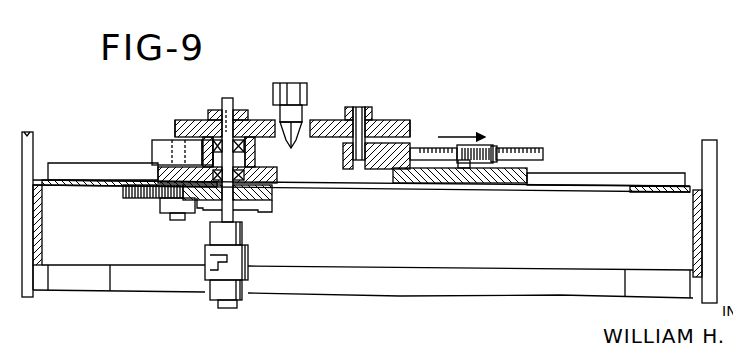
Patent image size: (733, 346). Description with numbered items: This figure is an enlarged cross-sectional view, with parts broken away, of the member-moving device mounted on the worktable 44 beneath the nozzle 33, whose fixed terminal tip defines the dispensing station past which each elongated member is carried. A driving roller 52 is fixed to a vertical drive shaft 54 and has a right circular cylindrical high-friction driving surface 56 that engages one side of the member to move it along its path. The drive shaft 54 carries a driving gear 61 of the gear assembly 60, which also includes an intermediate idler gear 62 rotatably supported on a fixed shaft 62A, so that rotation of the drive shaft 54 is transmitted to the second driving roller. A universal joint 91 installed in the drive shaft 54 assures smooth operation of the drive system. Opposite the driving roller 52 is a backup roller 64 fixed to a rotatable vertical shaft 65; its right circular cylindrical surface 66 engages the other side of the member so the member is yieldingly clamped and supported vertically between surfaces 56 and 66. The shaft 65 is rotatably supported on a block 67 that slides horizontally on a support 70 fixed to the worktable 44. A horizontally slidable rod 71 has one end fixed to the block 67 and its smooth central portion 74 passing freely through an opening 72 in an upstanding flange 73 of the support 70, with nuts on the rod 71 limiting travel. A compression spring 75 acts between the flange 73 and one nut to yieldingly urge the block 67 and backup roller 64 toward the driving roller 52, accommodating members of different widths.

The nozzle 33 is at (299, 130).
The worktable 44 is at (572, 173).
The driving roller 52 is at (190, 118).
The drive shaft 54 is at (227, 200).
The high-friction driving surface 56 is at (175, 125).
The gear assembly 60 is at (148, 218).
The driving gear 61 is at (262, 203).
The intermediate idler gear 62 is at (133, 198).
The fixed shaft 62A is at (170, 148).
The backup roller 64 is at (387, 120).
The rotatable vertical shaft 65 is at (356, 107).
The right circular cylindrical surface 66 is at (410, 132).
The block 67 is at (377, 170).
The support 70 is at (385, 168).
The horizontally slidable rod 71 is at (538, 163).
The opening 72 is at (496, 155).
The upstanding flange 73 is at (492, 148).
The smooth central portion 74 is at (473, 166).
The compression spring 75 is at (460, 168).
The universal joint 91 is at (248, 256).